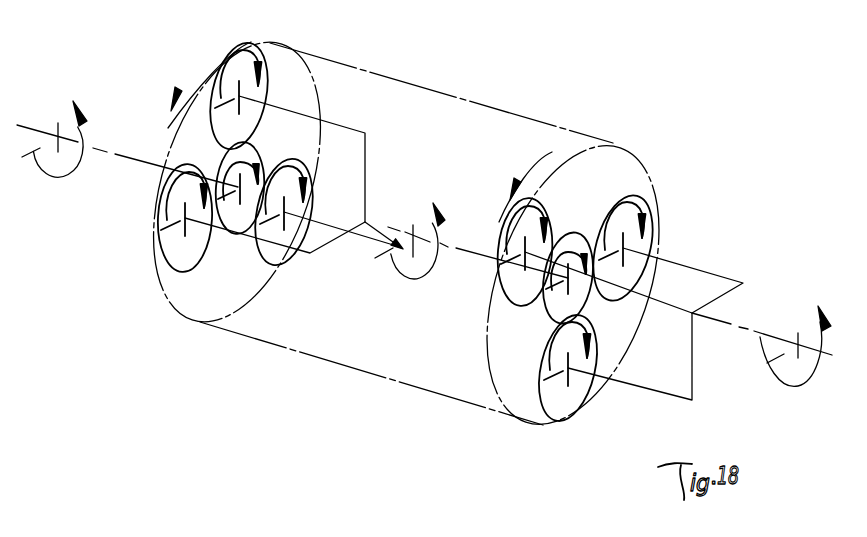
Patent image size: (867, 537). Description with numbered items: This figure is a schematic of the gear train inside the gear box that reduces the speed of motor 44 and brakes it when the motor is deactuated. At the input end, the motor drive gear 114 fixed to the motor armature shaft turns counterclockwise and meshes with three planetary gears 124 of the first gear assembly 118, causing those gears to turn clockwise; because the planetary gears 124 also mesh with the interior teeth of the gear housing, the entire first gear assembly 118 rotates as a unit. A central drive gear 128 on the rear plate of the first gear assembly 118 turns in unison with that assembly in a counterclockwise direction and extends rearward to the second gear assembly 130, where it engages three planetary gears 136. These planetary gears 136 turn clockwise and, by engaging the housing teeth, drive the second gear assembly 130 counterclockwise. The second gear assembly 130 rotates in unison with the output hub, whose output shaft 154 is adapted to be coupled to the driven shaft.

The motor 44 is at (45, 150).
The first gear assembly 118 is at (321, 38).
The planetary gears 124 is at (250, 44).
The motor drive gear 114 is at (250, 147).
The central drive gear 128 is at (408, 280).
The second gear assembly 130 is at (634, 135).
The planetary gears 136 is at (649, 213).
The output shaft 154 is at (760, 338).